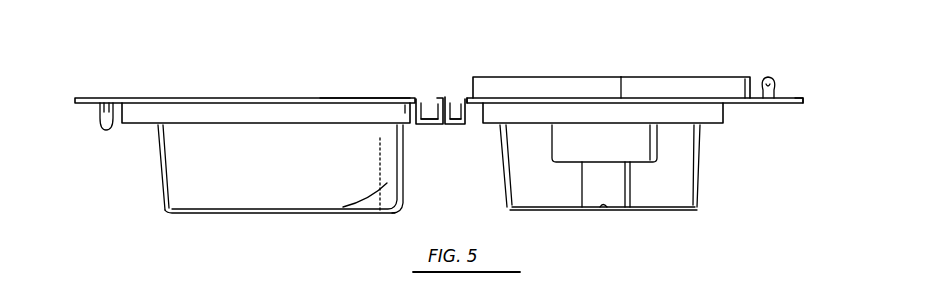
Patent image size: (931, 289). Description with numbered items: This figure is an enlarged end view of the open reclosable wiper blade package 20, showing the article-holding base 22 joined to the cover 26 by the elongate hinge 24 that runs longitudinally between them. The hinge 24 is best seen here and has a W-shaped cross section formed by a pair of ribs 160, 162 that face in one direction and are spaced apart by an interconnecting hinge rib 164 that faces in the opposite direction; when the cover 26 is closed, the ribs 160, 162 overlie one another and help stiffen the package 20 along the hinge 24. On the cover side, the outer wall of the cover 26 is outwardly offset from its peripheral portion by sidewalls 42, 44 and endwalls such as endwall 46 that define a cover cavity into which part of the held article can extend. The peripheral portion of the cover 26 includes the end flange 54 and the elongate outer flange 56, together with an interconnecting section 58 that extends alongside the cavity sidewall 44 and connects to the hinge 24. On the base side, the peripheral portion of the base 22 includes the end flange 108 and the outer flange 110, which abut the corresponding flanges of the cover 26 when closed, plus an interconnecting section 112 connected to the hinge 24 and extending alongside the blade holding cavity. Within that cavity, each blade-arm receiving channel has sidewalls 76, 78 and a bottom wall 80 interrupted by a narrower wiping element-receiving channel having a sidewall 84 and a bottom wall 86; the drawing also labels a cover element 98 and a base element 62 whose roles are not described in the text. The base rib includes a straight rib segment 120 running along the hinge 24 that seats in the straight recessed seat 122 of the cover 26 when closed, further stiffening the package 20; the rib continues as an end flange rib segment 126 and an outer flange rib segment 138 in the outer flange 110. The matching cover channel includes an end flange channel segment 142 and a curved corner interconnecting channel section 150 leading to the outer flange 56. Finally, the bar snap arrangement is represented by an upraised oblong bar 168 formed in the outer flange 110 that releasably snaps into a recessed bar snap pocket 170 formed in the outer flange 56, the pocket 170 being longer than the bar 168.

The reclosable package 20 is at (171, 72).
The article-holding base 22 is at (670, 54).
The hinge 24 is at (447, 134).
The cover 26 is at (268, 38).
The sidewall 42 is at (160, 186).
The sidewall 44 is at (392, 163).
The endwall 46 is at (200, 183).
The end flange 54 is at (330, 72).
The outer flange 56 is at (88, 98).
The interconnecting section 58 is at (415, 100).
The side wall of second tray 62 is at (704, 125).
The sidewall 76 is at (657, 145).
The sidewall 78 is at (552, 157).
The bottom wall 80 is at (657, 151).
The sidewall 84 is at (583, 186).
The bottom wall 86 is at (598, 208).
The bottom wall 98 is at (228, 210).
The end flange 108 is at (630, 65).
The outer flange 110 is at (786, 97).
The interconnecting section 112 is at (463, 97).
The straight rib segment 120 is at (467, 97).
The recessed seat 122 is at (383, 200).
The end flange rib segment 126 is at (600, 76).
The outer flange rib segment 138 is at (742, 76).
The end flange channel segment 142 is at (224, 123).
The curved corner interconnecting channel section 150 is at (137, 127).
The rib 160 is at (428, 124).
The rib 162 is at (455, 125).
The interconnecting hinge rib 164 is at (437, 97).
The upraised bar 168 is at (769, 72).
The bar snap pocket 170 is at (97, 137).